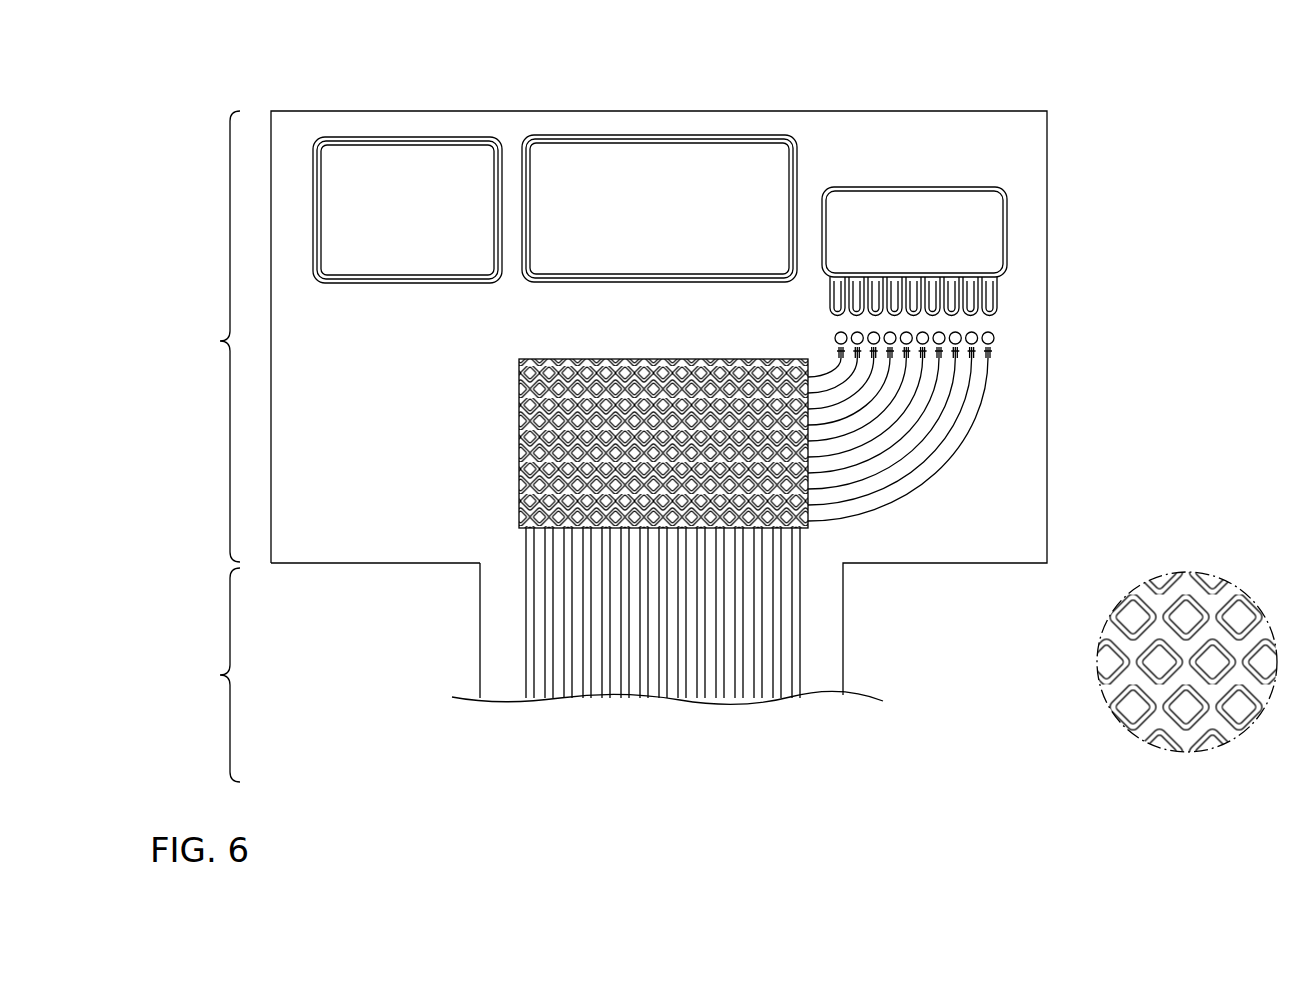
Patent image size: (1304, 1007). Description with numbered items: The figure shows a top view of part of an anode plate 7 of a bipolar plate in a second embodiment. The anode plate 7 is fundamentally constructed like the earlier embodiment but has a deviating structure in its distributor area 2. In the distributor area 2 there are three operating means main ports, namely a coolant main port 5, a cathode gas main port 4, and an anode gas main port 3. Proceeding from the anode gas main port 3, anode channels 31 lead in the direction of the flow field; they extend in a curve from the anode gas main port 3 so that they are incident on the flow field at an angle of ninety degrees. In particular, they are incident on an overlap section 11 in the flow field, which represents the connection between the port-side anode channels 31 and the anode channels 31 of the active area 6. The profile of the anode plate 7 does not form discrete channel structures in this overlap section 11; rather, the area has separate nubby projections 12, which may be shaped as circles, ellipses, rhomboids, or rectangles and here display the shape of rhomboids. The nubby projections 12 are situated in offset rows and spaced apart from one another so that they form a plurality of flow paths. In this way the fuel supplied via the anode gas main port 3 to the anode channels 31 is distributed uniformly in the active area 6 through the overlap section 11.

The anode plate 7 is at (1097, 110).
The distributor area 2 is at (216, 336).
The active area 6 is at (496, 655).
The coolant main port 5 is at (403, 158).
The cathode gas main port 4 is at (697, 158).
The anode gas main port 3 is at (918, 208).
The nubby projections 12 is at (1050, 452).
The overlap section 11 is at (841, 555).
The anode channels 31 is at (885, 590).